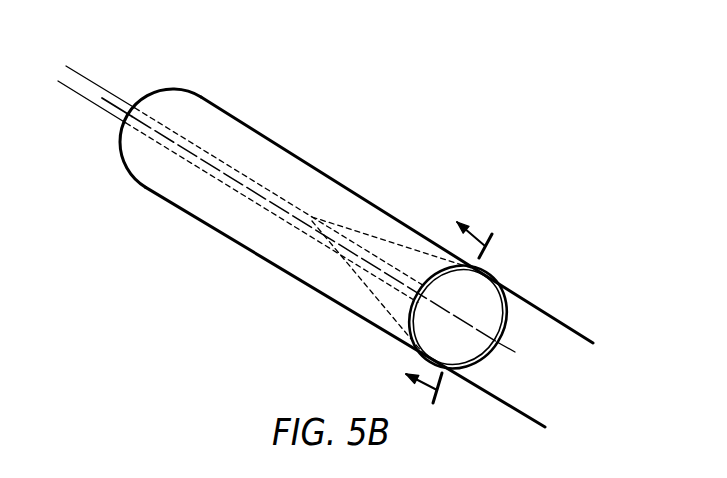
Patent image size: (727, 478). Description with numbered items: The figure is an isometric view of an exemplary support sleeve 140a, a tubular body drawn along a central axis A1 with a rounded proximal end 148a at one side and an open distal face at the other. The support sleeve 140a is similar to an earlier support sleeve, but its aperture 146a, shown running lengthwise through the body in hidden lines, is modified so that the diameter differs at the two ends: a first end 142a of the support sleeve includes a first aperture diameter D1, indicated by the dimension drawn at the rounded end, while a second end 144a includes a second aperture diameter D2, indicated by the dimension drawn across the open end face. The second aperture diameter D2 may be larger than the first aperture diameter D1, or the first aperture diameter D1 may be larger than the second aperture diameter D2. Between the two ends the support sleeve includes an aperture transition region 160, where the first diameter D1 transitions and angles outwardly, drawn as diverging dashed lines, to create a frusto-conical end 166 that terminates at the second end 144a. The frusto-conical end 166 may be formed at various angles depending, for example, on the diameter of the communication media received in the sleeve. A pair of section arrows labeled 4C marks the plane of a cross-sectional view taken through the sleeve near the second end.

The support sleeve 140a is at (315, 233).
The first end 142a is at (177, 97).
The second end 144a is at (420, 242).
The aperture 146a is at (112, 99).
The rounded proximal end 148a is at (116, 159).
The aperture transition region 160 is at (315, 217).
The frusto-conical end 166 is at (363, 305).
The longitudinal axis A1 is at (521, 357).
The first aperture diameter D1 is at (44, 122).
The second aperture diameter D2 is at (588, 345).
The section line 4C is at (464, 321).